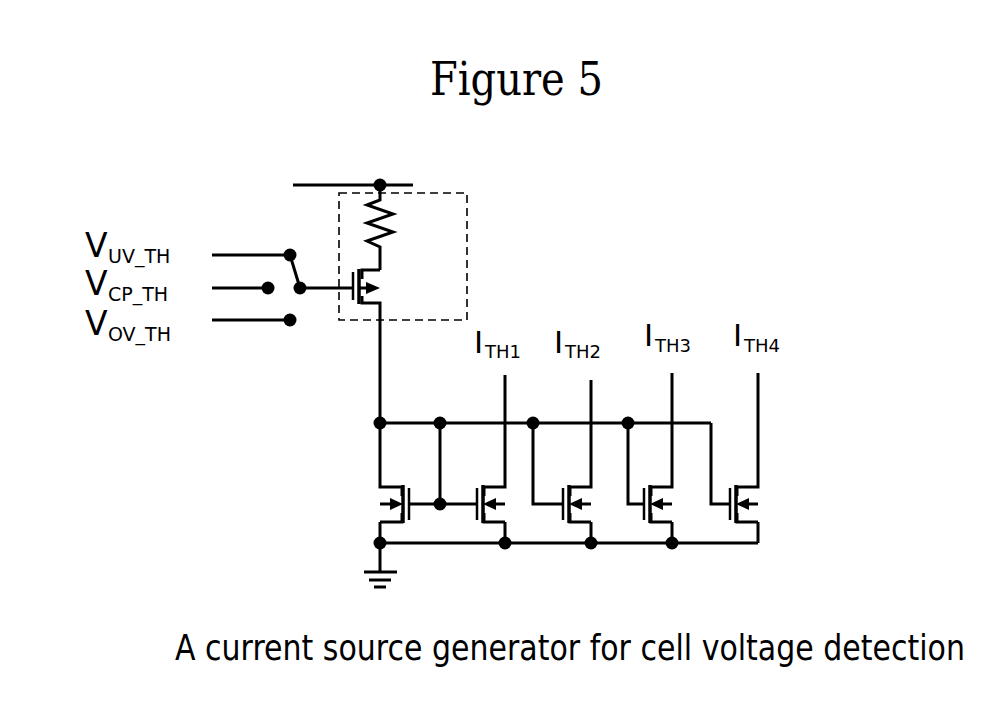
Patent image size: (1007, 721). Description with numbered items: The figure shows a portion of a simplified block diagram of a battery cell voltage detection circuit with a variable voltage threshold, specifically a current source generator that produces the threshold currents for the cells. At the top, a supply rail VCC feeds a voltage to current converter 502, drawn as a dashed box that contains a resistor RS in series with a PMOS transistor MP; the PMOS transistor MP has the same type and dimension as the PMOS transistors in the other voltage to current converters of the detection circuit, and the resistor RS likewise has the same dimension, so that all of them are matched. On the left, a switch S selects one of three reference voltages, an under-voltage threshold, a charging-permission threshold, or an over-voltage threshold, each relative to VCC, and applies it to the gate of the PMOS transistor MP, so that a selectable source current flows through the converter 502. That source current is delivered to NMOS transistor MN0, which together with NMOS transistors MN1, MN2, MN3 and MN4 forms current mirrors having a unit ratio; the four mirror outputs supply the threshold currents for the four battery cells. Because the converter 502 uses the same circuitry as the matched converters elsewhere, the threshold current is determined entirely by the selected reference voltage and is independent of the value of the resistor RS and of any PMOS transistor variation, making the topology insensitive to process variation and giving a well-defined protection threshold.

The voltage to current converter 502 is at (441, 302).
The supply voltage VCC is at (353, 163).
The resistor RS is at (395, 227).
The PMOS transistor MP is at (374, 342).
The switch S is at (266, 283).
The NMOS transistor MN0 is at (351, 483).
The NMOS transistor MN1 is at (498, 488).
The NMOS transistor MN2 is at (590, 491).
The NMOS transistor MN3 is at (683, 487).
The NMOS transistor MN4 is at (770, 487).